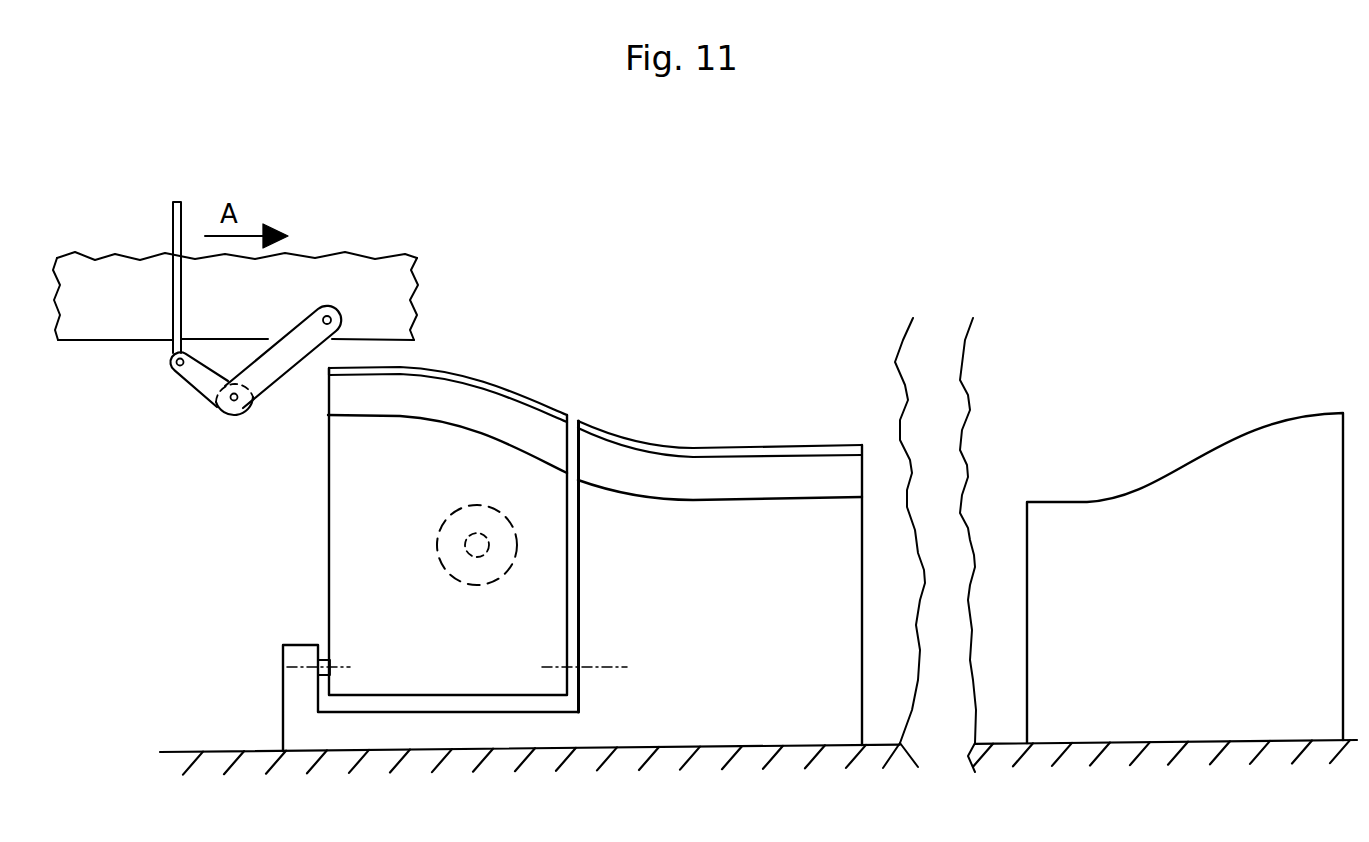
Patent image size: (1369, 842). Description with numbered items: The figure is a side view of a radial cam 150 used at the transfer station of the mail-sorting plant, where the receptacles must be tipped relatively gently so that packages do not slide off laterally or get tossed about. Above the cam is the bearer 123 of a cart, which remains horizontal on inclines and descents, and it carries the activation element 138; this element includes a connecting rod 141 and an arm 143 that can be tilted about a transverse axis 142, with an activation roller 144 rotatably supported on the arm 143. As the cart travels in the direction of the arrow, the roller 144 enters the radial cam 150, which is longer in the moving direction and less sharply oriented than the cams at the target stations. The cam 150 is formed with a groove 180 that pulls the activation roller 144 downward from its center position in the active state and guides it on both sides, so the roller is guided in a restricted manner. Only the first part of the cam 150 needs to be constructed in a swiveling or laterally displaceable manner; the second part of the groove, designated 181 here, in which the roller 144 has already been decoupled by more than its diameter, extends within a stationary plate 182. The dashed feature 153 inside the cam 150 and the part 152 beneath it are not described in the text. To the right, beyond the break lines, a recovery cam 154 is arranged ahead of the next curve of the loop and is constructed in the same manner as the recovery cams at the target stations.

The bearer 123 is at (113, 273).
The activation element 138 is at (254, 321).
The connecting rod 141 is at (180, 217).
The transverse axis 142 is at (330, 317).
The arm 143 is at (303, 337).
The activation roller 144 is at (233, 420).
The radial cam 150 is at (350, 528).
The tray 152 is at (270, 672).
The roller 153 is at (477, 520).
The recovery cam 154 is at (1213, 478).
The groove 180 is at (450, 397).
The rear cover 181 is at (648, 470).
The stationary plate 182 is at (827, 522).